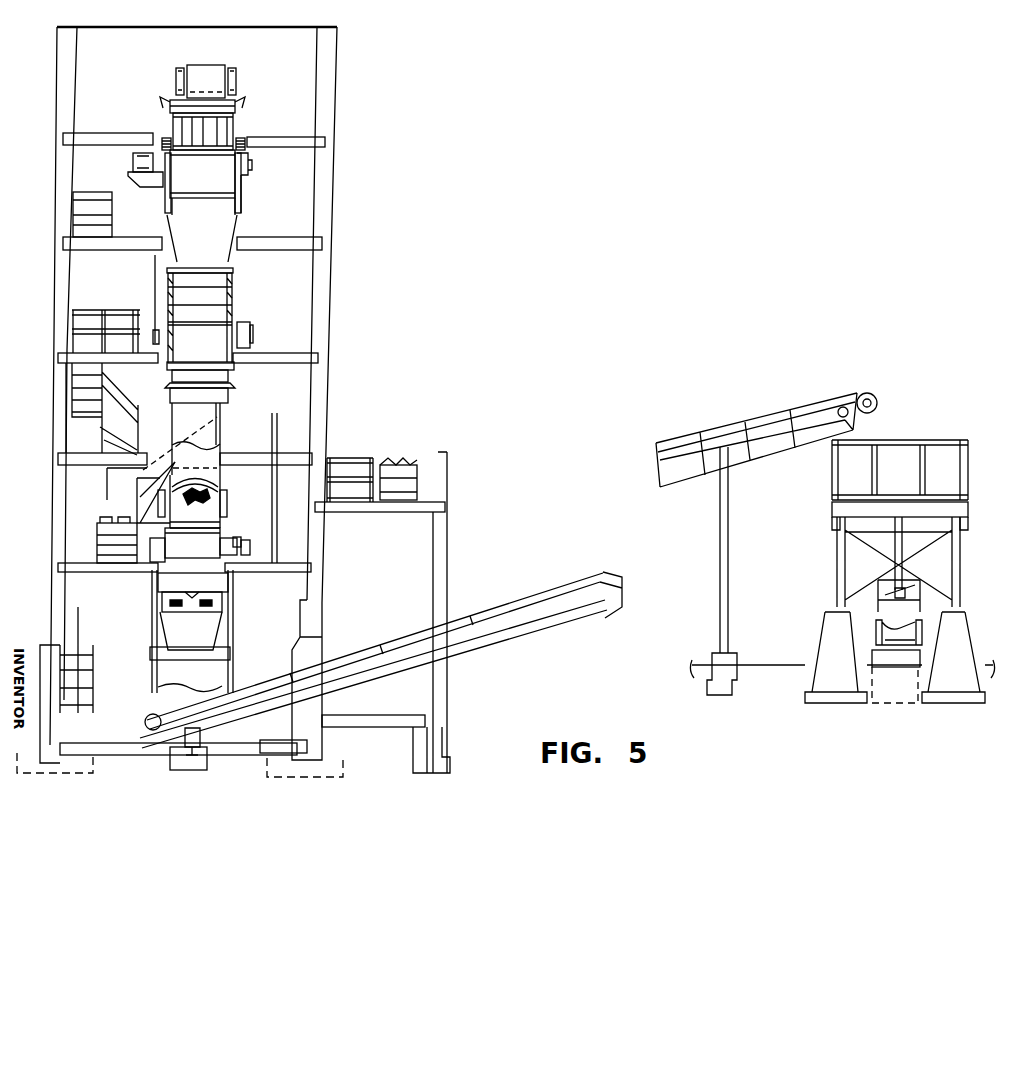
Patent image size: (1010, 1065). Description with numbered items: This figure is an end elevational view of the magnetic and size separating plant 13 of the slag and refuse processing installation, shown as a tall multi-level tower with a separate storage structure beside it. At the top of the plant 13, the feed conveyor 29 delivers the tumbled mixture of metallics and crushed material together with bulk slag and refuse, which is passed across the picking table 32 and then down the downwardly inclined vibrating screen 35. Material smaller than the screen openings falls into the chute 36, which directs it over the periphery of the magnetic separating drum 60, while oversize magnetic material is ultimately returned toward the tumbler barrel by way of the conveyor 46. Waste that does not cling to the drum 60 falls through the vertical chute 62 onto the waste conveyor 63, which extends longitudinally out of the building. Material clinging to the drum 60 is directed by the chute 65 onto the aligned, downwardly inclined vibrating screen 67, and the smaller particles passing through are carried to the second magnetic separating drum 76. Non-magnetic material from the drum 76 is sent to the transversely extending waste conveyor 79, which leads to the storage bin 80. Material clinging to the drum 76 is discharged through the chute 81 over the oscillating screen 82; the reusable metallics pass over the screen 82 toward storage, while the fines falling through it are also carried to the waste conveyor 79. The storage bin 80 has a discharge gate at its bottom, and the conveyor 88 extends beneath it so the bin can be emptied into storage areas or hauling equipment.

The magnetic and size separating plant 13 is at (357, 47).
The feed conveyor 29 is at (215, 78).
The picking table 32 is at (176, 106).
The vibrating screen 35 is at (218, 140).
The chute 36 is at (218, 245).
The magnetic separating drum 60 is at (210, 343).
The chute 65 is at (207, 450).
The vibrating screen 67 is at (212, 494).
The magnetic separating drum 76 is at (208, 547).
The chute 81 is at (207, 570).
The oscillating screen 82 is at (163, 608).
The vertical chute 62 is at (127, 492).
The waste conveyor 63 is at (97, 525).
The conveyor 46 is at (397, 465).
The waste conveyor 79 is at (528, 620).
The storage bin 80 is at (895, 465).
The conveyor 88 is at (890, 625).